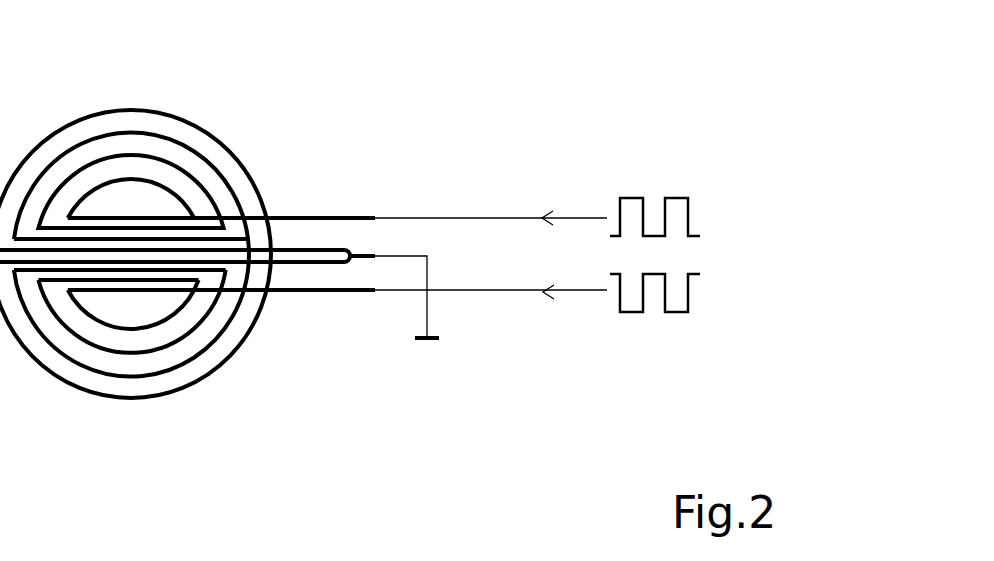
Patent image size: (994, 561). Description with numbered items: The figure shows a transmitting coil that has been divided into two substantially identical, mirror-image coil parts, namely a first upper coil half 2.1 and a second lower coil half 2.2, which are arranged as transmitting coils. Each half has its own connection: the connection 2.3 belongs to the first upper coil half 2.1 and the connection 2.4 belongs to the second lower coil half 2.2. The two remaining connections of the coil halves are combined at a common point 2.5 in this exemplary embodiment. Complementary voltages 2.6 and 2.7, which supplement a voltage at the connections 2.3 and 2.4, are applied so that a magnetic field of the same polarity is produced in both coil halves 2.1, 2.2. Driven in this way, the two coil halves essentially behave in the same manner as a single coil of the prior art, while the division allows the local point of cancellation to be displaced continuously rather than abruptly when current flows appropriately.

The first upper coil half 2.1 is at (185, 131).
The second lower coil half 2.2 is at (190, 380).
The connection for the first upper coil half 2.3 is at (362, 212).
The connection for the second lower coil half 2.4 is at (355, 298).
The combined connection 2.5 is at (355, 249).
The complementary voltage 2.6 is at (656, 196).
The complementary voltage 2.7 is at (665, 327).